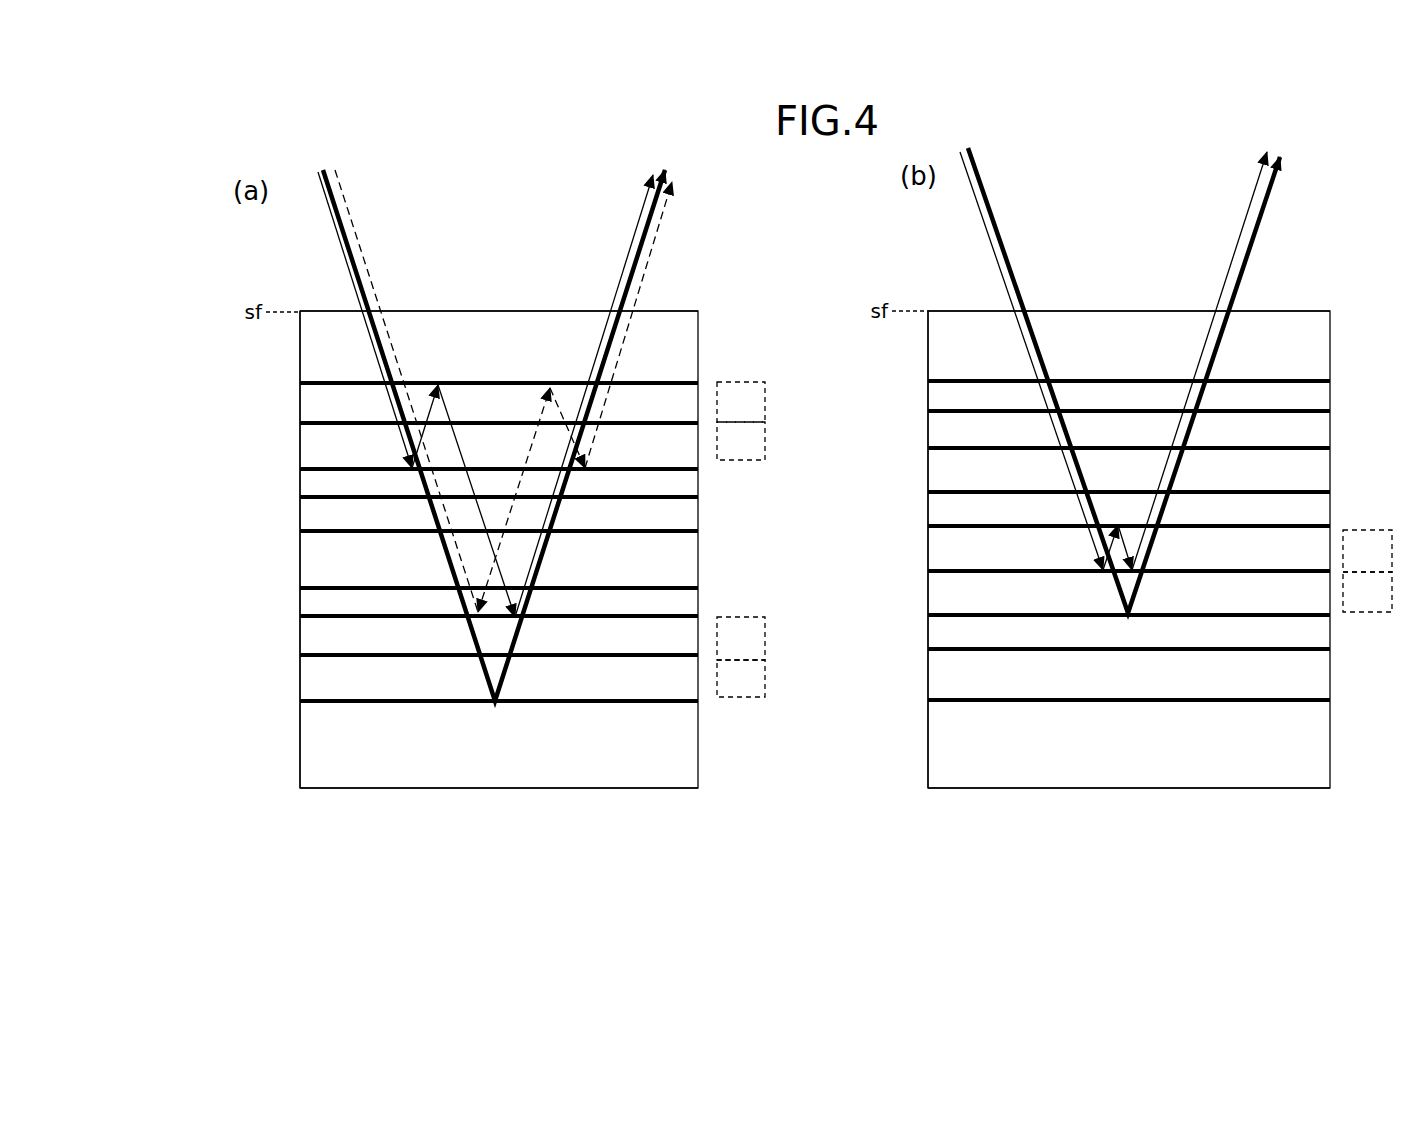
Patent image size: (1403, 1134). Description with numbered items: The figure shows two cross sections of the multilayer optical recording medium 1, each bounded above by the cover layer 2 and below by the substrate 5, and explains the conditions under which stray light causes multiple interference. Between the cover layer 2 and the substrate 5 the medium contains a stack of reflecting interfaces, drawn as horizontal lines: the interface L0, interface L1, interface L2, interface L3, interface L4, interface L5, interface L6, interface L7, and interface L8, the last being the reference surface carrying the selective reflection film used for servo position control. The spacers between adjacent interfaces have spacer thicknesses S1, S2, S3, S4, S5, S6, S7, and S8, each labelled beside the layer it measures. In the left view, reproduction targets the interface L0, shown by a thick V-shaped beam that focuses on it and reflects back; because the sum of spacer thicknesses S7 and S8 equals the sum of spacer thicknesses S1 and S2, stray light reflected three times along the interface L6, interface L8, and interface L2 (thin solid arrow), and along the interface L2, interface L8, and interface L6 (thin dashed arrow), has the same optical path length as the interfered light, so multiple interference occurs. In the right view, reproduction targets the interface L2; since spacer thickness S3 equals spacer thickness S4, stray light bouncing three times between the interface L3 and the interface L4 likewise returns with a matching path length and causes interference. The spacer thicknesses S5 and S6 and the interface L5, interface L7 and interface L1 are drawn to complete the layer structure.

The multilayer optical recording medium 1 is at (600, 602).
The cover layer 2 is at (836, 341).
The substrate 5 is at (844, 773).
The interface L0 is at (773, 701).
The interface L1 is at (784, 652).
The interface L2 is at (770, 615).
The interface L3 is at (784, 579).
The interface L4 is at (784, 528).
The interface L5 is at (784, 494).
The interface L6 is at (773, 458).
The interface L7 is at (784, 417).
The interface L8 is at (733, 379).
The spacer thickness S1 is at (1032, 678).
The spacer thickness S2 is at (1032, 638).
The spacer thickness S3 is at (1039, 592).
The spacer thickness S4 is at (1039, 551).
The spacer thickness S5 is at (1032, 509).
The spacer thickness S6 is at (1032, 476).
The spacer thickness S7 is at (1032, 439).
The spacer thickness S8 is at (1032, 402).